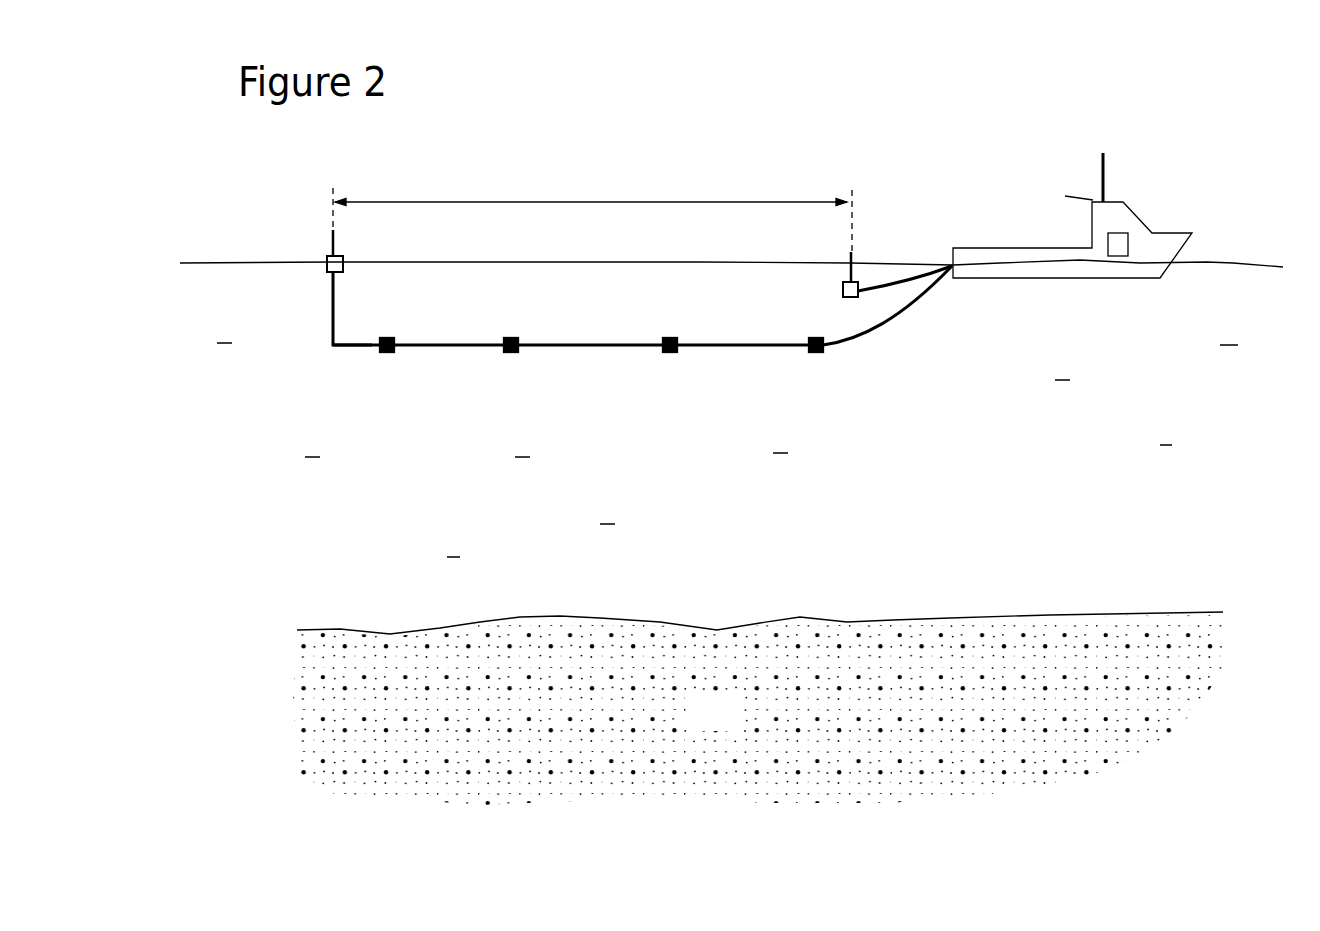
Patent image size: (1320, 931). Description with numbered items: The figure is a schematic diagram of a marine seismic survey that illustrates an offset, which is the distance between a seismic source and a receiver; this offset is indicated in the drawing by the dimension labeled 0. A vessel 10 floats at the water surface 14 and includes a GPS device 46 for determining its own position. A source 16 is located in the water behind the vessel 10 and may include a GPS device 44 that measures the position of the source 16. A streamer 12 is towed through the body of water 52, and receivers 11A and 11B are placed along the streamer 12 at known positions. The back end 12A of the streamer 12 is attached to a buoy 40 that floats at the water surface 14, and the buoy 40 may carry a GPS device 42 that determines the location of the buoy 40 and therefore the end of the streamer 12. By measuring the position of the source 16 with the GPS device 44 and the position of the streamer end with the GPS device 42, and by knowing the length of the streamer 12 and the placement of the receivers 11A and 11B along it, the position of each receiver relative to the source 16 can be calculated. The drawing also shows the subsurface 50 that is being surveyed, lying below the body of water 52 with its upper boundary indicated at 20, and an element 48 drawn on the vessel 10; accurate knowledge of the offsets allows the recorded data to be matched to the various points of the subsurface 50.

The vessel 10 is at (1097, 195).
The streamer 12 is at (628, 340).
The back end of the streamer 12A is at (353, 348).
The receiver 11A is at (512, 353).
The receiver 11B is at (669, 355).
The water surface 14 is at (1233, 263).
The source 16 is at (835, 268).
The water bottom 20 is at (913, 620).
The buoy 40 is at (306, 242).
The GPS device 42 is at (327, 260).
The GPS device 44 is at (853, 256).
The GPS device 46 is at (1103, 170).
The recording system 48 is at (1127, 233).
The subsurface 50 is at (721, 724).
The body of water 52 is at (895, 485).
The streamer offset distance 0 is at (592, 215).